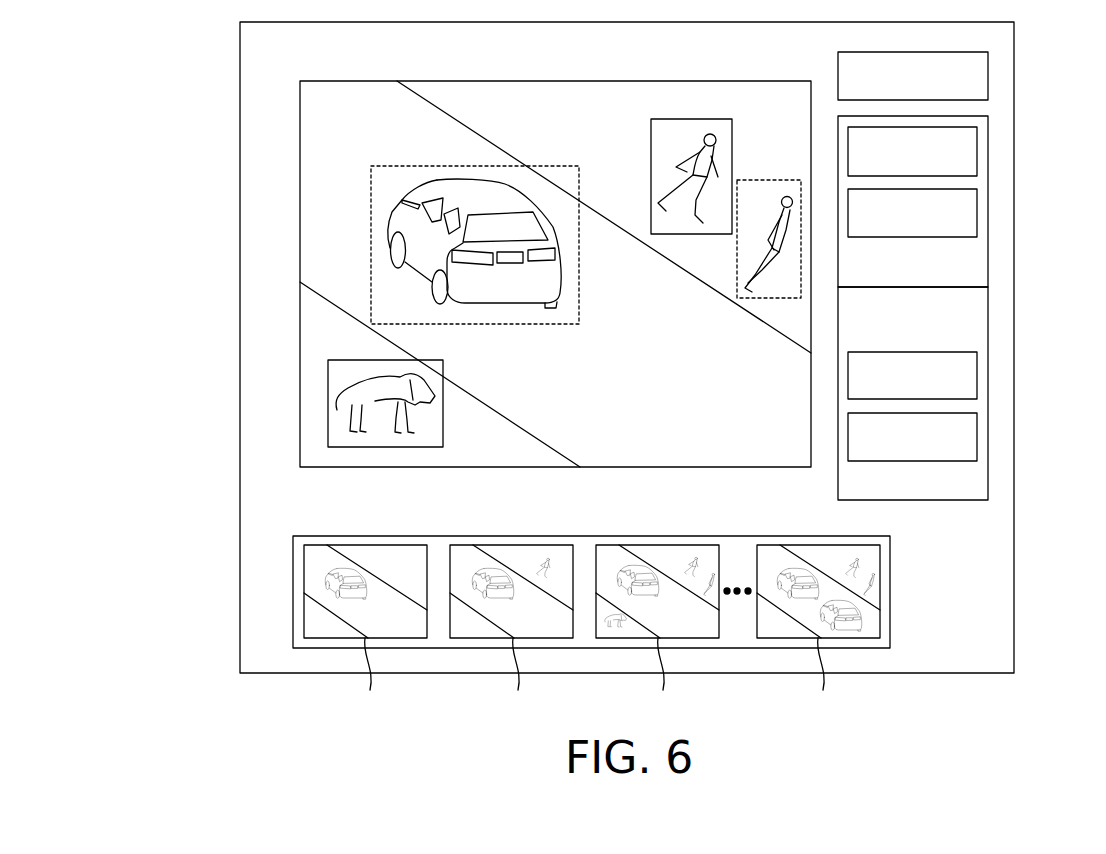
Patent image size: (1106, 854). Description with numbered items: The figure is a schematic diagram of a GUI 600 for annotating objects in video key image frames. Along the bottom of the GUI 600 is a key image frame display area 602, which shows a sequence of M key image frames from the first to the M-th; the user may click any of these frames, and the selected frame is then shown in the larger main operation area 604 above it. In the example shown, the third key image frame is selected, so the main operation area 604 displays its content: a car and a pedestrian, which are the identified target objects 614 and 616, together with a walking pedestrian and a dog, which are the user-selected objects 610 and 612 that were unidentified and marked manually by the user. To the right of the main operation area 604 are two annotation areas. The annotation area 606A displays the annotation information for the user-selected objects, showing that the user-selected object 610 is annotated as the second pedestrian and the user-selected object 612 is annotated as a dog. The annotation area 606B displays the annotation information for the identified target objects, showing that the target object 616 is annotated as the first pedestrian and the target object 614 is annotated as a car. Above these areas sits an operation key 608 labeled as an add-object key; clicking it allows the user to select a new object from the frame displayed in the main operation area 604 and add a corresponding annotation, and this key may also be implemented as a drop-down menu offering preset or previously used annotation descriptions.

The GUI 600 is at (240, 52).
The key image frame display area 602 is at (293, 565).
The main operation area 604 is at (300, 150).
The annotation area 606A is at (988, 200).
The annotation area 606B is at (988, 392).
The operation key 608 is at (988, 73).
The user-selected object 610 is at (690, 119).
The user-selected object 612 is at (358, 360).
The target object 614 is at (387, 163).
The target object 616 is at (771, 180).